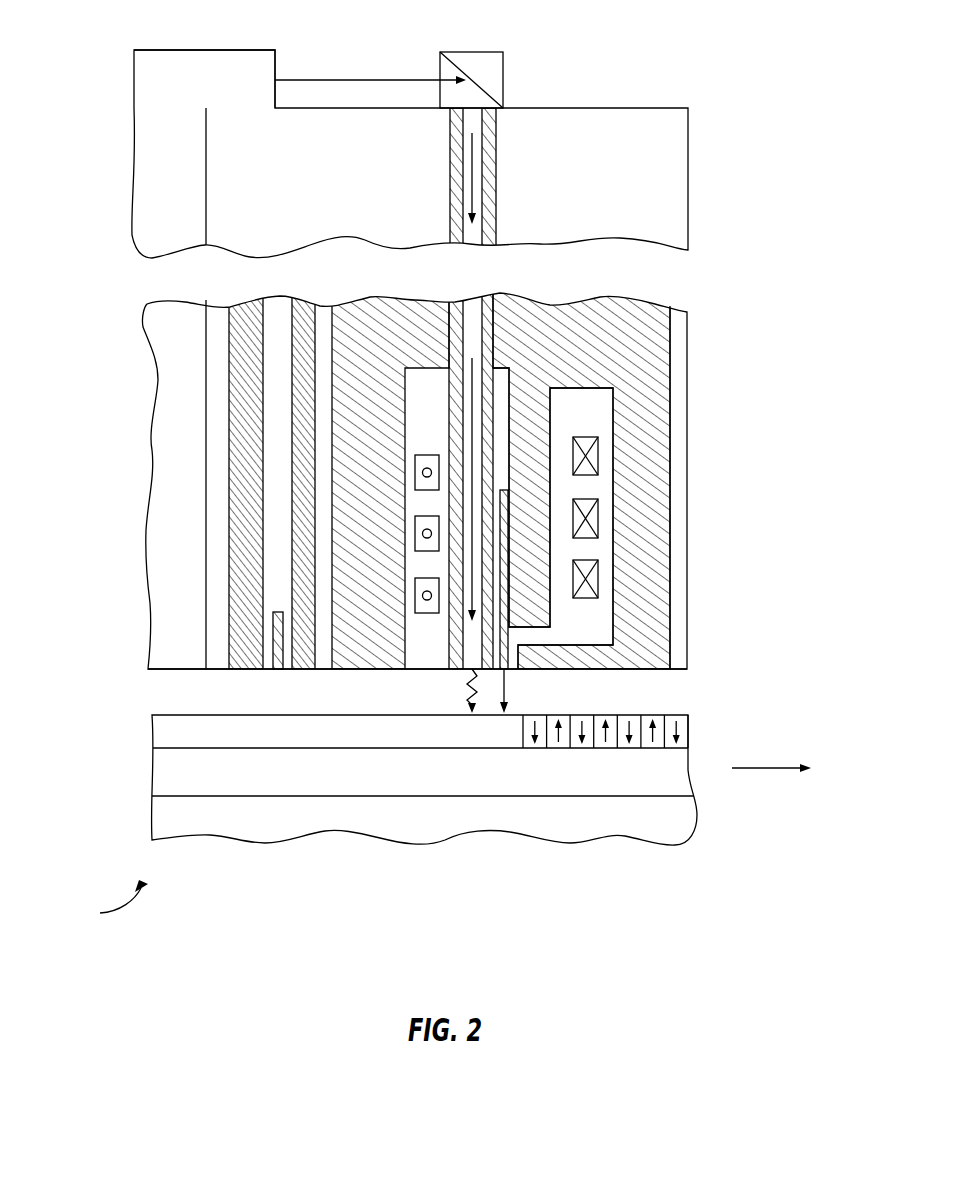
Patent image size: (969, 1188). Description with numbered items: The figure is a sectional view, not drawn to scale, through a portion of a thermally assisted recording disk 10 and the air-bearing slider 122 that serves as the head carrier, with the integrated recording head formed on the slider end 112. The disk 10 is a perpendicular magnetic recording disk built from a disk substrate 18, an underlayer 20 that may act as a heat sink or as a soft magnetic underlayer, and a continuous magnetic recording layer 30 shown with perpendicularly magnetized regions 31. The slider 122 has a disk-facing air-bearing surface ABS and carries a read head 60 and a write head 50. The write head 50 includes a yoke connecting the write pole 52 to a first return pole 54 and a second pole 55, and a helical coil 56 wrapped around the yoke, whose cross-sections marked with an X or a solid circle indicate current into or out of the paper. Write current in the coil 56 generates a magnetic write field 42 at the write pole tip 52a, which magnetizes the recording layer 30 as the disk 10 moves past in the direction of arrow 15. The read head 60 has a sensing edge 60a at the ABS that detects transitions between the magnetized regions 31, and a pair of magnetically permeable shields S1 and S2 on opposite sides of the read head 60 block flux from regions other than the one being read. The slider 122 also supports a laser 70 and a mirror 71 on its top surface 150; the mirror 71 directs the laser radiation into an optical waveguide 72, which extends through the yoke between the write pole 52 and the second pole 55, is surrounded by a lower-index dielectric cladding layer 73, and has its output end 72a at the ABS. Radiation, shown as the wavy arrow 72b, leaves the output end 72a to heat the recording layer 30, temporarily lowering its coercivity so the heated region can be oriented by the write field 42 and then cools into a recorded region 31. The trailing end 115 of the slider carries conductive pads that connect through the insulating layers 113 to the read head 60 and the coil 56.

The TAR disk 10 is at (109, 903).
The direction arrow 15 is at (778, 767).
The disk substrate 18 is at (160, 817).
The underlayer 20 is at (160, 777).
The magnetic recording layer 30 is at (160, 733).
The magnetized regions 31 is at (690, 722).
The magnetic write field 42 is at (498, 702).
The write head 50 is at (750, 312).
The write pole 52 is at (517, 635).
The write pole tip 52a is at (505, 673).
The first return pole 54 is at (603, 660).
The second pole 55 is at (365, 660).
The coil 56 is at (415, 456).
The read head 60 is at (272, 632).
The sensing edge 60a is at (278, 672).
The laser 70 is at (182, 50).
The mirror 71 is at (505, 72).
The optical waveguide 72 is at (475, 187).
The waveguide output end 72a is at (467, 677).
The radiation 72b is at (468, 700).
The dielectric cladding layer 73 is at (455, 300).
The slider end 112 is at (205, 220).
The insulating layers 113 is at (677, 135).
The trailing end 115 is at (692, 192).
The air-bearing slider 122 is at (152, 157).
The top surface 150 is at (650, 107).
The first shield S1 is at (245, 303).
The second shield S2 is at (305, 305).
The air-bearing surface ABS is at (170, 672).